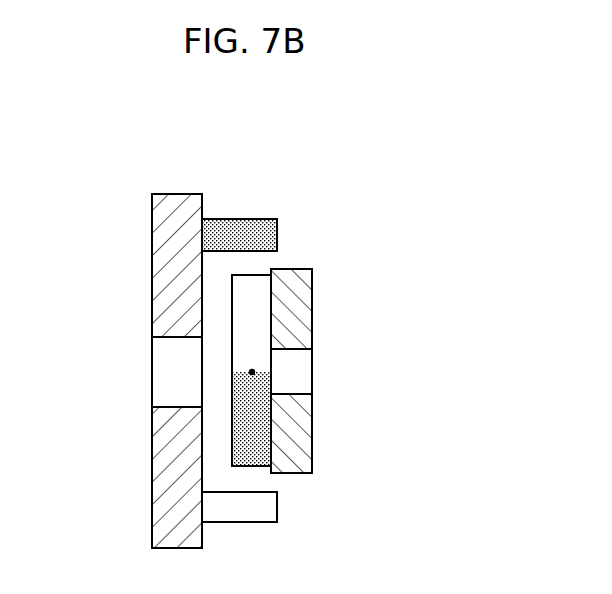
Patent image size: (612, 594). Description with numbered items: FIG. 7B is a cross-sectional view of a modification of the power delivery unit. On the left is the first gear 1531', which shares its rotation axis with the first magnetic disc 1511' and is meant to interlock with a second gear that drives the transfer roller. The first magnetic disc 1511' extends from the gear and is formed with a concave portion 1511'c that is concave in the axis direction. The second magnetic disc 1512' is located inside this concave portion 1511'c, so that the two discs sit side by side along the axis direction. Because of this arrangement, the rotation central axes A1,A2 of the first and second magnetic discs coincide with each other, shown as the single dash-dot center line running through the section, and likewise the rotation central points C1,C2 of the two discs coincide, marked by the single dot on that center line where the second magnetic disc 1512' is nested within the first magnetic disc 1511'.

The first gear 1531' is at (185, 324).
The first magnetic disc 1511' is at (255, 186).
The concave portion 1511'c is at (297, 505).
The second magnetic disc 1512' is at (300, 323).
The rotation central points C1,C2 is at (252, 372).
The rotation central axes A1,A2 is at (77, 372).